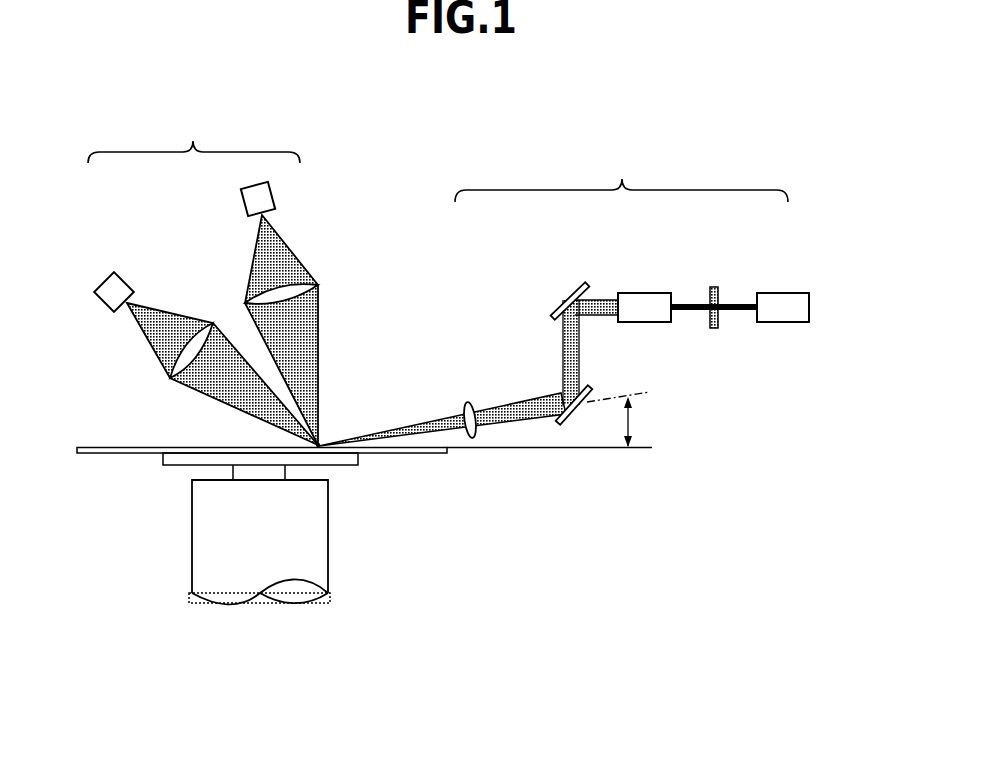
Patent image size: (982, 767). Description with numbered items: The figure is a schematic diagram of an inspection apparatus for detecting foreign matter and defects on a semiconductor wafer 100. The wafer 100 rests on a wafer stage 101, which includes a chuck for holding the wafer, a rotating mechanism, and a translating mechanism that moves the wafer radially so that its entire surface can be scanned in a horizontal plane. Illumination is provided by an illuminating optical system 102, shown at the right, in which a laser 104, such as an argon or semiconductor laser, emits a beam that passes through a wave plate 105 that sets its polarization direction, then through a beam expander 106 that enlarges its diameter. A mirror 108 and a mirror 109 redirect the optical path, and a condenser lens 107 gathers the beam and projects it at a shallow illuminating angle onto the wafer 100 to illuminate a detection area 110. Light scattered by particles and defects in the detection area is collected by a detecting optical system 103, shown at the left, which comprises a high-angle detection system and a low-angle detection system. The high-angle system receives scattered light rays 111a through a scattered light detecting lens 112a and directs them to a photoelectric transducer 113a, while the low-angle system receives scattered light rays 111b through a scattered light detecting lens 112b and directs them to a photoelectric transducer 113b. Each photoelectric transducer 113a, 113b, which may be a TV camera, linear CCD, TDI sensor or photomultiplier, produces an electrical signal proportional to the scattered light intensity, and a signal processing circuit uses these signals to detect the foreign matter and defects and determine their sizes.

The wafer 100 is at (410, 453).
The wafer stage 101 is at (343, 465).
The illuminating optical system 102 is at (578, 326).
The detecting optical system 103 is at (241, 276).
The laser 104 is at (790, 323).
The wave plate 105 is at (714, 328).
The beam expander 106 is at (633, 292).
The condenser lens 107 is at (465, 407).
The mirror 108 is at (572, 283).
The mirror 109 is at (563, 427).
The detection area 110 is at (326, 444).
The scattered light rays 111a is at (320, 332).
The scattered light rays 111b is at (217, 407).
The scattered light detecting lens 112a is at (318, 286).
The scattered light detecting lens 112b is at (168, 379).
The photoelectric transducer 113a is at (273, 196).
The photoelectric transducer 113b is at (120, 277).